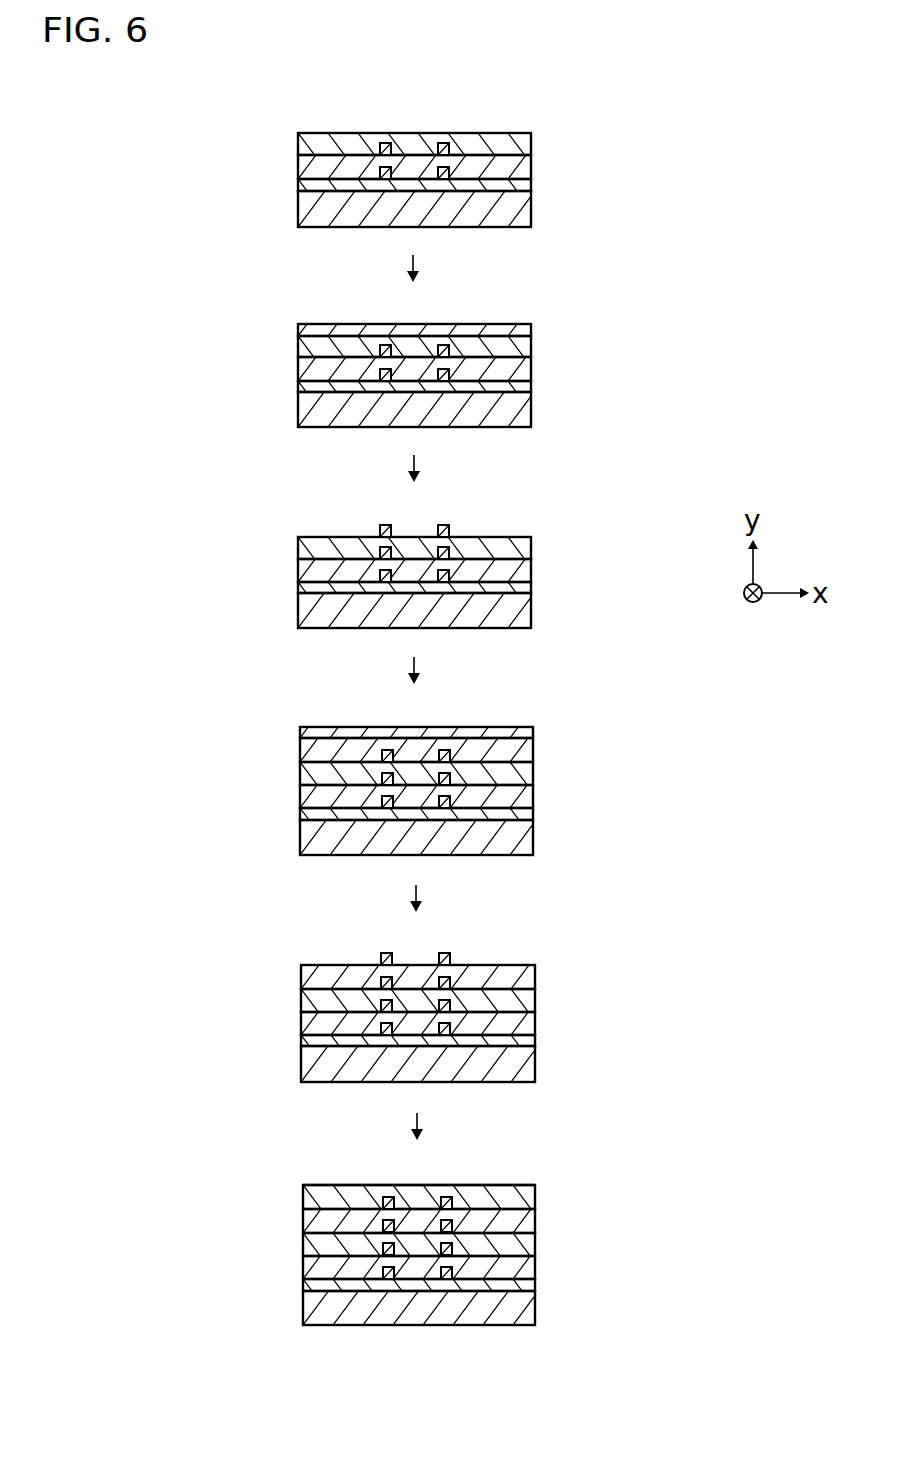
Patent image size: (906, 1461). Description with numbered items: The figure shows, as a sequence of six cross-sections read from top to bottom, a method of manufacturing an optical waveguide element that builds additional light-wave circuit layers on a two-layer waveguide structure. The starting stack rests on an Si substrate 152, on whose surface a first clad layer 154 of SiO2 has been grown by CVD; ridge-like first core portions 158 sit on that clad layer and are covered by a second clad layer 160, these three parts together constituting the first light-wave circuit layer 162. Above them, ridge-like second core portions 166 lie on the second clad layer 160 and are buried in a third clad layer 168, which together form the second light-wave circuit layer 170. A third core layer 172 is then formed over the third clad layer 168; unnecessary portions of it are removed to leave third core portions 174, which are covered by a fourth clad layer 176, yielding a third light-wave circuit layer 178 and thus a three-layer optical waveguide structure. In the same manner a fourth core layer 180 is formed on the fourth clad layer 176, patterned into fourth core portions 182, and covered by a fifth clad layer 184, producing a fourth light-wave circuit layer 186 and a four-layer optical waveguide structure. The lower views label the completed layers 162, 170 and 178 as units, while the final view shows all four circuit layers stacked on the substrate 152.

The Si substrate 152 is at (303, 205).
The first clad layer 154 is at (527, 183).
The first core portions 158 is at (387, 170).
The second clad layer 160 is at (523, 165).
The first light-wave circuit layer 162 is at (640, 757).
The second core portions 166 is at (387, 148).
The third clad layer 168 is at (523, 143).
The second light-wave circuit layer 170 is at (210, 768).
The third core layer 172 is at (515, 328).
The third core portions 174 is at (448, 527).
The fourth clad layer 176 is at (312, 752).
The third light-wave circuit layer 178 is at (210, 690).
The fourth core layer 180 is at (523, 732).
The fourth core portions 182 is at (450, 953).
The fifth clad layer 184 is at (310, 1197).
The fourth light-wave circuit layer 186 is at (218, 1137).